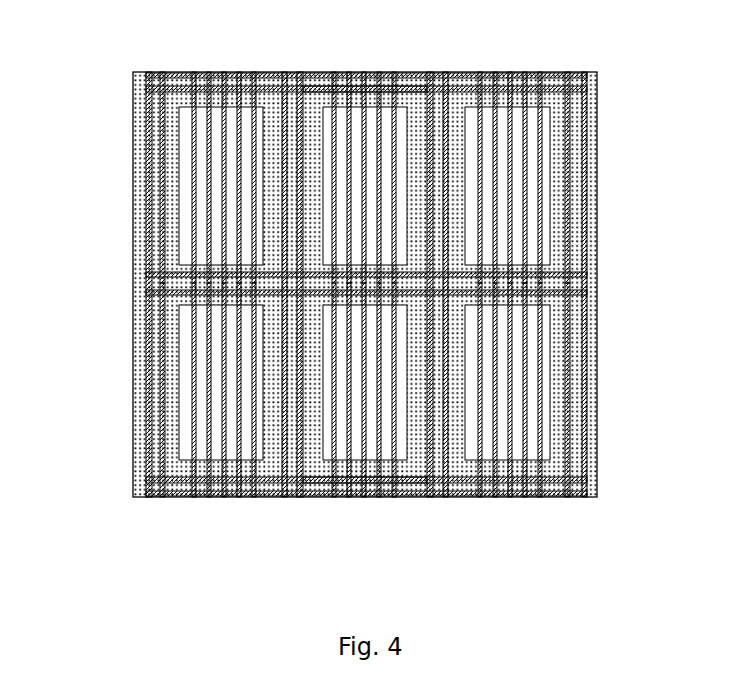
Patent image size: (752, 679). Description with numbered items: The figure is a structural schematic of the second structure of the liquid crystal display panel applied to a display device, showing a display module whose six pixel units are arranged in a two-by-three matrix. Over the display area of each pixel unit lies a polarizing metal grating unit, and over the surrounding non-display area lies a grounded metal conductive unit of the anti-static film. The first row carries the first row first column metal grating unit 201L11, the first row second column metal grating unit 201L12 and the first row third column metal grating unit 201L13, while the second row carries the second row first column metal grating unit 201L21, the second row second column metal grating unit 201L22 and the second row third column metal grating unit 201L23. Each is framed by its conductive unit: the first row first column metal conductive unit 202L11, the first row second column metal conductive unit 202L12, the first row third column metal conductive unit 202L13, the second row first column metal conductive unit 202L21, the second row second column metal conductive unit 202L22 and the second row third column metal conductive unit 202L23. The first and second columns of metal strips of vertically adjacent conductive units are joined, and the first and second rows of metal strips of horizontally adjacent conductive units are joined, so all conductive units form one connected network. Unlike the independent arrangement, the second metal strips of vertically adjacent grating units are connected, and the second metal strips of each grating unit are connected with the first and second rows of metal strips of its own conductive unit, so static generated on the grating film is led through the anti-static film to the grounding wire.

The first row first column metal grating unit 201L11 is at (191, 122).
The first row first column metal conductive unit 202L11 is at (165, 180).
The first row second column metal grating unit 201L12 is at (357, 117).
The first row second column metal conductive unit 202L12 is at (368, 88).
The first row third column metal grating unit 201L13 is at (538, 142).
The first row third column metal conductive unit 202L13 is at (565, 203).
The second row first column metal grating unit 201L21 is at (192, 363).
The second row first column metal conductive unit 202L21 is at (165, 432).
The second row second column metal grating unit 201L22 is at (362, 437).
The second row second column metal conductive unit 202L22 is at (387, 473).
The second row third column metal grating unit 201L23 is at (537, 395).
The second row third column metal conductive unit 202L23 is at (563, 445).